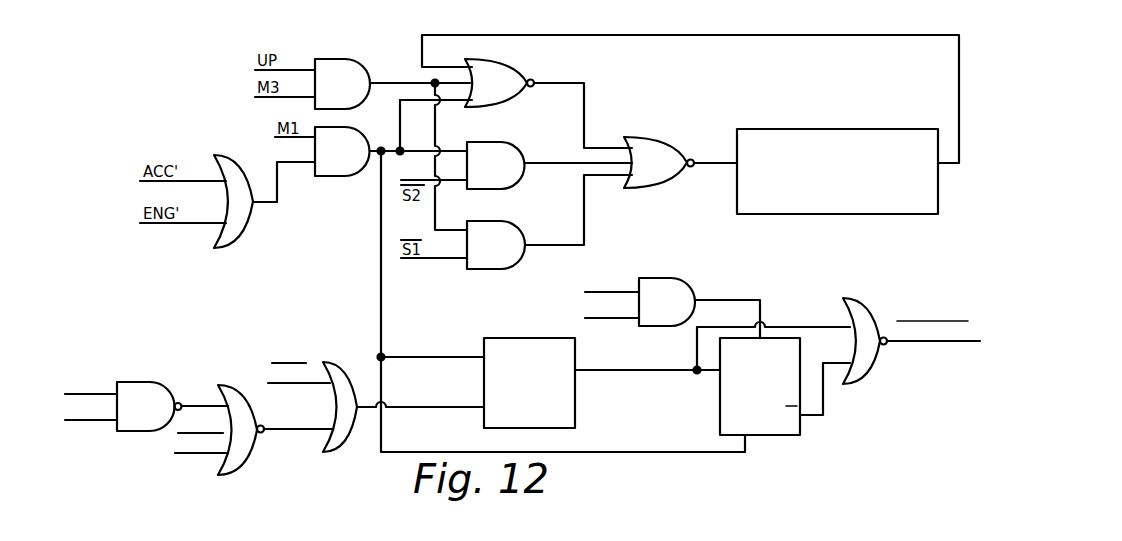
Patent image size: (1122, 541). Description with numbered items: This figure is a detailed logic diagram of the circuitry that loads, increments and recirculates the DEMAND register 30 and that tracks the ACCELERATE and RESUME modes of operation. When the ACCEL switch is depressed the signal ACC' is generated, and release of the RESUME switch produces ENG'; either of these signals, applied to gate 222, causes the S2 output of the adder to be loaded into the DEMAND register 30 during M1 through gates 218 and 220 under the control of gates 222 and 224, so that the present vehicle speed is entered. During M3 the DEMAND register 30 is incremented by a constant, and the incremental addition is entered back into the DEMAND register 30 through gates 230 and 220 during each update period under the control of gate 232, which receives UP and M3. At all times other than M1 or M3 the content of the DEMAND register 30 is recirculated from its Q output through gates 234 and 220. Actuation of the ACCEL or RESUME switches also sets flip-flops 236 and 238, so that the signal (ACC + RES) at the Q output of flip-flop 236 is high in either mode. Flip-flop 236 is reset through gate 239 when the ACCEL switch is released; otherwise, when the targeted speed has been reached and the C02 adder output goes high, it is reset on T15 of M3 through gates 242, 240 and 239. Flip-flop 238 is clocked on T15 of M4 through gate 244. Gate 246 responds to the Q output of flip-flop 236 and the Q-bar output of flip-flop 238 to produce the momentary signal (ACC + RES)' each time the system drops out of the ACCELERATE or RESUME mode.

The gate 232 is at (337, 72).
The gate 234 is at (508, 72).
The gate 218 is at (498, 156).
The gate 220 is at (660, 157).
The DEMAND register 30 is at (833, 131).
The gate 222 is at (237, 172).
The gate 224 is at (335, 163).
The gate 230 is at (500, 238).
The gate 242 is at (142, 392).
The gate 240 is at (233, 400).
The gate 239 is at (338, 375).
The flip-flop 236 is at (562, 400).
The gate 244 is at (663, 290).
The gate 246 is at (862, 313).
The flip-flop 238 is at (773, 425).